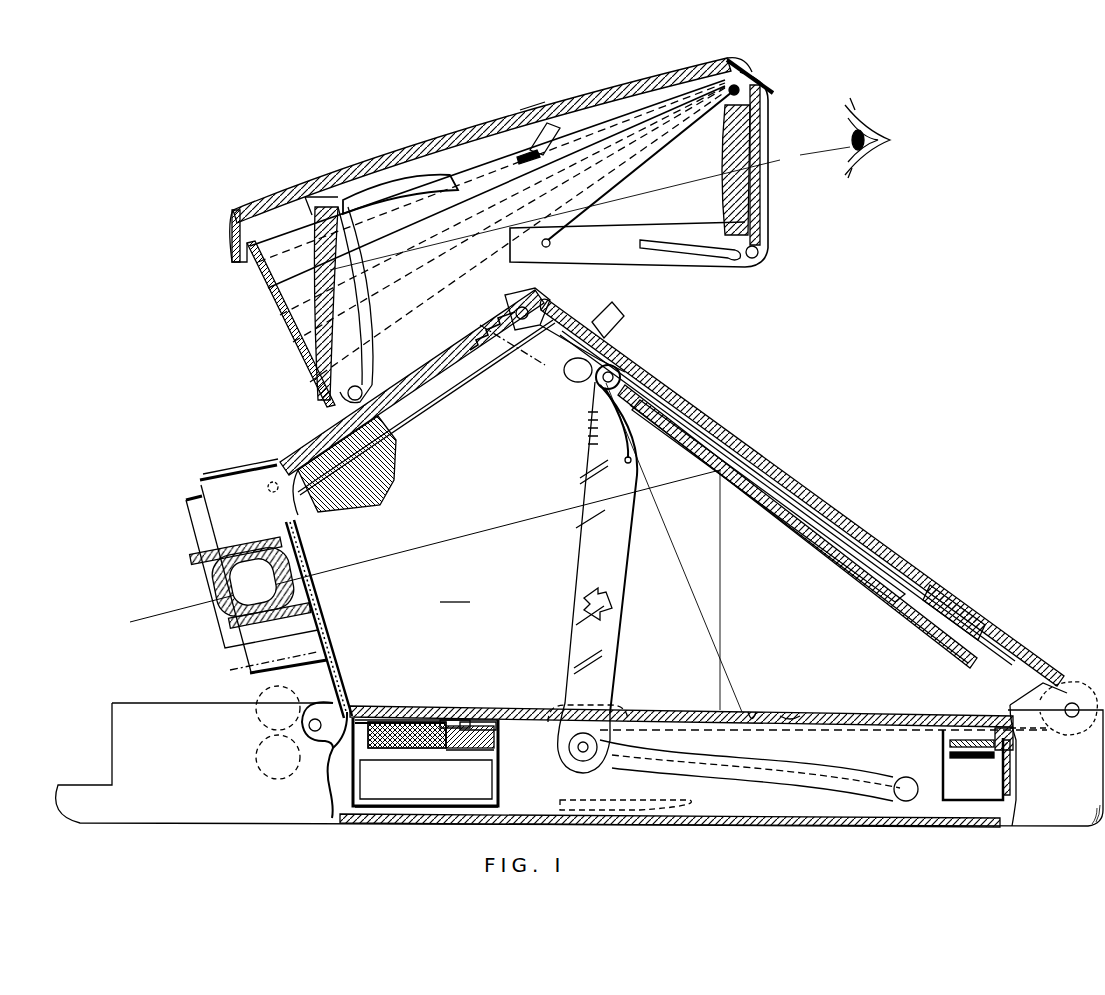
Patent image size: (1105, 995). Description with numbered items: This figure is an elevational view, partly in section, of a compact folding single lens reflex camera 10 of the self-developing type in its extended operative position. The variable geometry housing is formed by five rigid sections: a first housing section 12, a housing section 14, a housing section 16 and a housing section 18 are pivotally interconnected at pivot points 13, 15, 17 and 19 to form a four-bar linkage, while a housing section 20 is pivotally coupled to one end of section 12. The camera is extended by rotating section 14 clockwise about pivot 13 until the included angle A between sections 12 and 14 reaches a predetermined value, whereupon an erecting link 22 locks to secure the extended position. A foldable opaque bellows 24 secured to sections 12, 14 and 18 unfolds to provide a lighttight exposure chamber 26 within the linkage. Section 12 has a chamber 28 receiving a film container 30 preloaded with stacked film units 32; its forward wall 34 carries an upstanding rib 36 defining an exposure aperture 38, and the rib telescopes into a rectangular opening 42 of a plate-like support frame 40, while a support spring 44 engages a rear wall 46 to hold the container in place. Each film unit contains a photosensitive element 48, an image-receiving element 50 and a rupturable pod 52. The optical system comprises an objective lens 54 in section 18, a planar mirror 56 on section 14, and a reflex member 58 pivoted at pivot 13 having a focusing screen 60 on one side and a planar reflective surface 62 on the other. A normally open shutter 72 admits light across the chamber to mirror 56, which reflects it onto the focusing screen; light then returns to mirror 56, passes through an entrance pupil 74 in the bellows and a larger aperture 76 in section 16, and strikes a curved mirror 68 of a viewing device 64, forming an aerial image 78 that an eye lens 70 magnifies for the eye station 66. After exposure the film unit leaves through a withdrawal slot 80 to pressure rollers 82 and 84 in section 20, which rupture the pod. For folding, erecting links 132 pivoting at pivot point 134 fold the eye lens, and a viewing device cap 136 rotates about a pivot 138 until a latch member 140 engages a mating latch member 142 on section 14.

The camera 10 is at (840, 410).
The first housing section 12 is at (829, 832).
The pivot point 13 is at (1076, 700).
The housing section 14 is at (940, 556).
The pivot point 15 is at (528, 318).
The housing section 16 is at (283, 420).
The pivot point 17 is at (268, 480).
The housing section 18 is at (170, 522).
The pivot point 19 is at (315, 718).
The housing section 20 is at (260, 824).
The erecting link 22 is at (588, 562).
The bellows 24 is at (318, 512).
The exposure chamber 26 is at (455, 593).
The chamber 28 is at (470, 810).
The film container 30 is at (418, 800).
The film unit 32 is at (436, 765).
The forward wall 34 is at (428, 718).
The upstanding rib 36 is at (455, 712).
The exposure aperture 38 is at (482, 718).
The support frame 40 is at (978, 722).
The rectangular opening 42 is at (960, 722).
The support spring 44 is at (635, 812).
The rear wall 46 is at (985, 803).
The photosensitive element 48 is at (492, 752).
The image-receiving element 50 is at (472, 748).
The rupturable pod 52 is at (393, 748).
The objective lens 54 is at (210, 584).
The planar mirror 56 is at (820, 550).
The reflex member 58 is at (838, 702).
The focusing screen 60 is at (792, 714).
The planar reflective surface 62 is at (754, 712).
The viewing device 64 is at (290, 168).
The eye station 66 is at (852, 178).
The curved mirror 68 is at (340, 272).
The eye lens 70 is at (735, 190).
The shutter 72 is at (306, 545).
The entrance pupil 74 is at (548, 340).
The aperture 76 is at (402, 382).
The aerial image 78 is at (522, 192).
The withdrawal slot 80 is at (350, 735).
The pressure applying roller 82 is at (265, 700).
The pressure applying roller 84 is at (259, 757).
The erecting link 132 is at (712, 268).
The pivot point 134 is at (549, 245).
The viewing device cap 136 is at (460, 130).
The pivot 138 is at (750, 72).
The latch member 140 is at (548, 108).
The mating latch member 142 is at (596, 312).
The included angle A is at (996, 722).